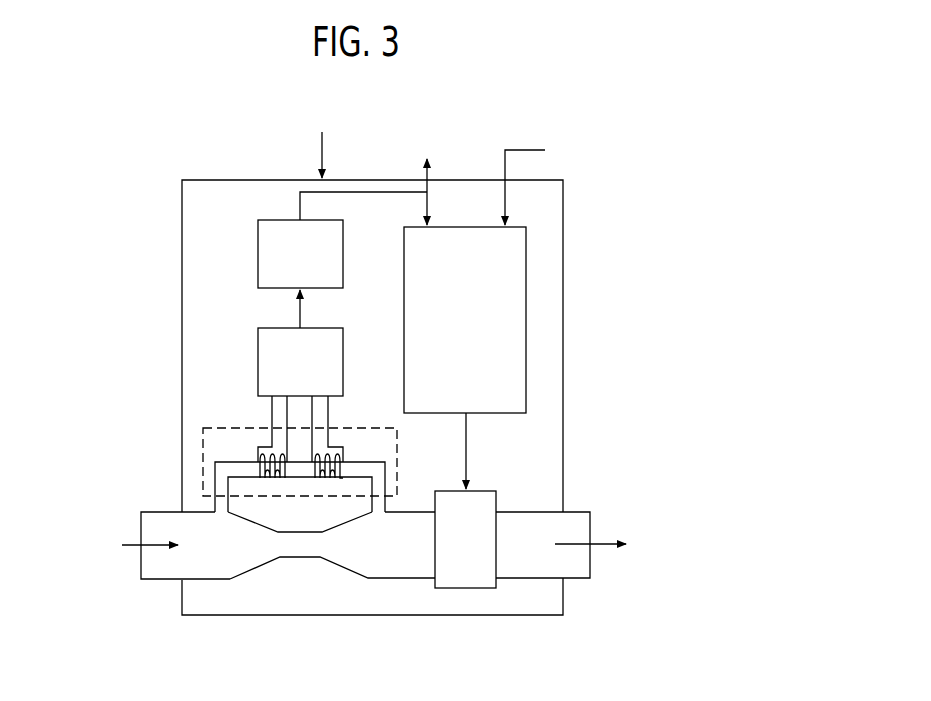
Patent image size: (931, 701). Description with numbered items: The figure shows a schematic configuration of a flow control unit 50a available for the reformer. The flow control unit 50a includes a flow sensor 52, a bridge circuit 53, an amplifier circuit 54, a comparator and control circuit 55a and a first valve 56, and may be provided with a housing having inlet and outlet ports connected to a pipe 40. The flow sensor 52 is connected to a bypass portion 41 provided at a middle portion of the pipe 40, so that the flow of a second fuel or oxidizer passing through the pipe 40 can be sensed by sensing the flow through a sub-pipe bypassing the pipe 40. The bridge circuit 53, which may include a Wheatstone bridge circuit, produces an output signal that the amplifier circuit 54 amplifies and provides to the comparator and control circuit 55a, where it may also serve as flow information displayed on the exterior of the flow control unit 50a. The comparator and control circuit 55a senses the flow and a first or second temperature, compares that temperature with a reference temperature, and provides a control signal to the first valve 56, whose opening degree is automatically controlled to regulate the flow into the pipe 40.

The flow control unit 50a is at (223, 130).
The amplifier circuit 54 is at (258, 253).
The bridge circuit 53 is at (258, 360).
The flow sensor 52 is at (203, 447).
The comparator and control circuit 55a is at (526, 318).
The first valve 56 is at (496, 500).
The pipe 40 is at (400, 579).
The bypass portion 41 is at (302, 551).